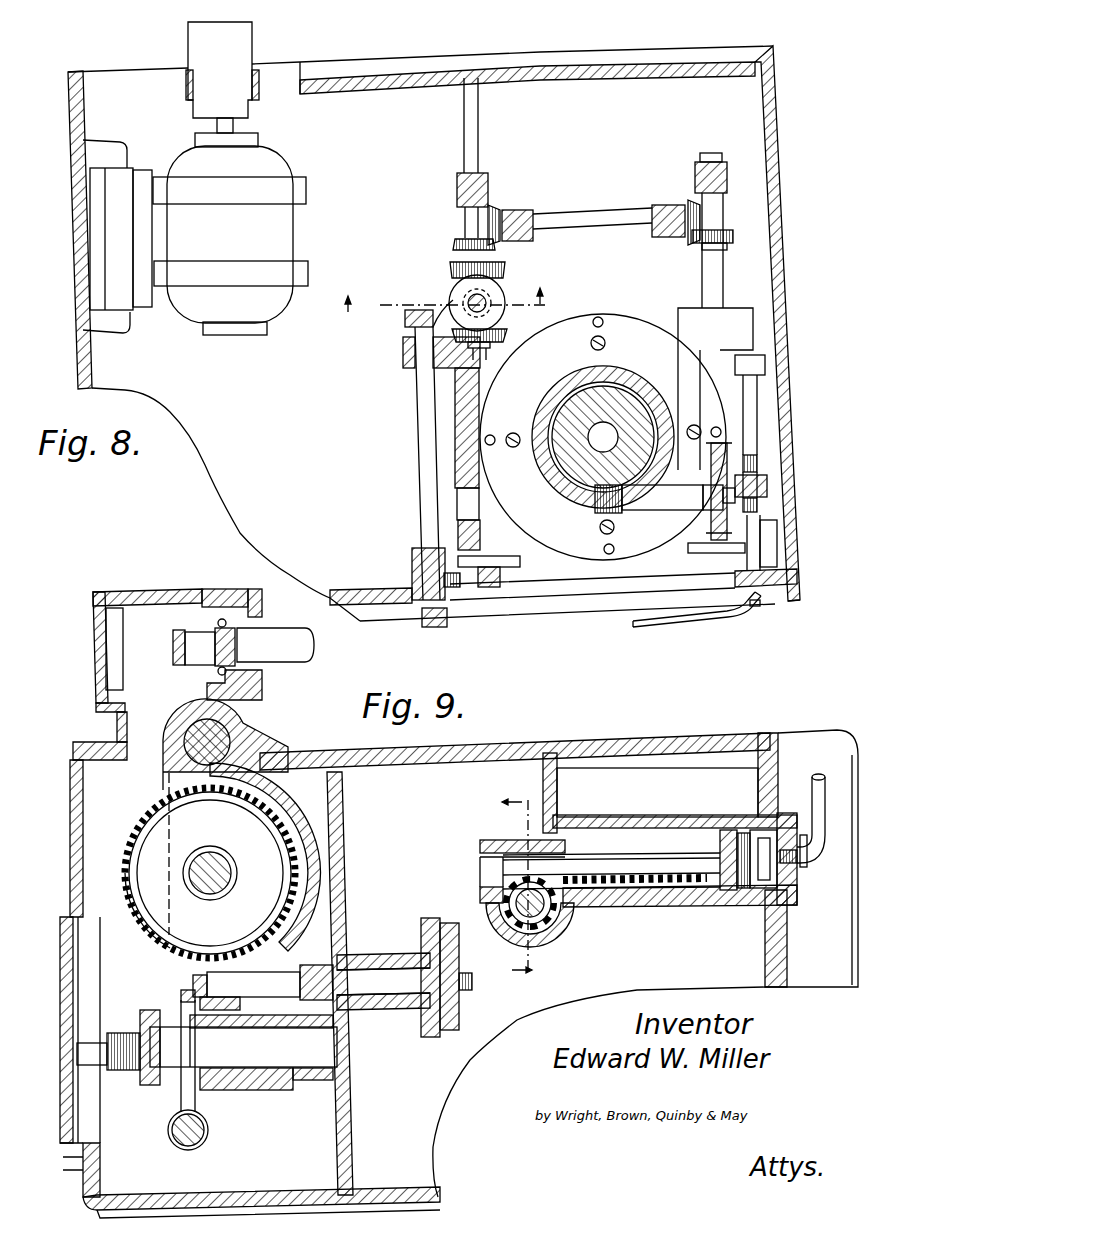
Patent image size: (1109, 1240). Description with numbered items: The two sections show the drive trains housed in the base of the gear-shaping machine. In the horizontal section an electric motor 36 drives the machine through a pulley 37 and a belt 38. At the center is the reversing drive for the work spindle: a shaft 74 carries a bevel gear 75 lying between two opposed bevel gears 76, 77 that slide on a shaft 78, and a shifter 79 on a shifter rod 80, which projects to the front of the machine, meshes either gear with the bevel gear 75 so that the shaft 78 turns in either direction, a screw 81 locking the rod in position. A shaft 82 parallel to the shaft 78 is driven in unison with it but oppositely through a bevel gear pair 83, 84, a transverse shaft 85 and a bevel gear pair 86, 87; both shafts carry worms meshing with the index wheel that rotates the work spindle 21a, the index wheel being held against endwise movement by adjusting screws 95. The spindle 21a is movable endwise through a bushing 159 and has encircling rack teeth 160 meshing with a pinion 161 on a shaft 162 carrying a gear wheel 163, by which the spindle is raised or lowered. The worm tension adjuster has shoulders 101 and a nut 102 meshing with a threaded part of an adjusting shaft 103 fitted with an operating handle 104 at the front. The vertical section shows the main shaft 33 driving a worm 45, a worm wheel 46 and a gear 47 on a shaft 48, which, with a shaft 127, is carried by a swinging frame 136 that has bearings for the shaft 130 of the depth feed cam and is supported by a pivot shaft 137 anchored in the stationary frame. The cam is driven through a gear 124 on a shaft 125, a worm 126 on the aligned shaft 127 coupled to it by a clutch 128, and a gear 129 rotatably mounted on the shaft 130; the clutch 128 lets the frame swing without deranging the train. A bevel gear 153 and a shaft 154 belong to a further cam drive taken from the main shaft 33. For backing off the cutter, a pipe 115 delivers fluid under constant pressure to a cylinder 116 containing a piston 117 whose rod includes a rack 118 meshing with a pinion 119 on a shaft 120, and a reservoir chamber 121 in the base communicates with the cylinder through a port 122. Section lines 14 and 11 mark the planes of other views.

In FIG. 8, the pulley 37 is at (218, 48).
In FIG. 8, the belt 38 is at (188, 93).
In FIG. 8, the electric motor 36 is at (199, 240).
In FIG. 8, the shaft 78 is at (470, 216).
In FIG. 8, the bevel gear 84 is at (494, 210).
In FIG. 8, the transverse shaft 85 is at (590, 222).
In FIG. 8, the bevel gear 86 is at (690, 205).
In FIG. 8, the bevel gear 87 is at (722, 238).
In FIG. 8, the shaft 82 is at (715, 292).
In FIG. 8, the bevel gear 83 is at (460, 246).
In FIG. 8, the bevel gear 76 is at (455, 272).
In FIG. 8, the bevel gear 75 is at (498, 292).
In FIG. 8, the shaft 74 is at (486, 308).
In FIG. 8, the bevel gear 77 is at (493, 334).
In FIG. 8, the section line 14 is at (355, 297).
In FIG. 8, the shifter 79 is at (447, 300).
In FIG. 8, the shifter rod 80 is at (426, 440).
In FIG. 8, the screw 81 is at (448, 590).
In FIG. 8, the work spindle 21a is at (640, 436).
In FIG. 8, the bushing 159 is at (552, 428).
In FIG. 8, the rack teeth 160 is at (575, 484).
In FIG. 8, the adjusting screws 95 is at (592, 343).
In FIG. 8, the pinion 161 is at (596, 506).
In FIG. 8, the shaft 162 is at (650, 497).
In FIG. 8, the gear wheel 163 is at (718, 526).
In FIG. 8, the adjusting shaft 103 is at (752, 422).
In FIG. 8, the nut 102 is at (757, 463).
In FIG. 8, the shoulders 101 is at (767, 485).
In FIG. 8, the operating handle 104 is at (695, 618).
In FIG. 9, the bevel gear 153 is at (187, 620).
In FIG. 9, the shaft 154 is at (278, 643).
In FIG. 9, the pivot shaft 137 is at (197, 728).
In FIG. 9, the swinging frame 136 is at (177, 787).
In FIG. 9, the shaft 130 is at (207, 888).
In FIG. 9, the gear 129 is at (142, 918).
In FIG. 9, the worm 126 is at (197, 972).
In FIG. 9, the shaft 127 is at (272, 991).
In FIG. 9, the clutch 128 is at (317, 970).
In FIG. 9, the shaft 125 is at (390, 989).
In FIG. 9, the gear 124 is at (440, 918).
In FIG. 9, the shaft 48 is at (207, 1052).
In FIG. 9, the gear 47 is at (143, 1083).
In FIG. 9, the worm wheel 46 is at (181, 1103).
In FIG. 9, the worm 45 is at (168, 1131).
In FIG. 9, the main shaft 33 is at (180, 1144).
In FIG. 9, the reservoir chamber 121 is at (643, 770).
In FIG. 9, the pipe 115 is at (818, 795).
In FIG. 9, the rack 118 is at (625, 884).
In FIG. 9, the shaft 120 is at (518, 930).
In FIG. 9, the pinion 119 is at (552, 924).
In FIG. 9, the piston 117 is at (732, 890).
In FIG. 9, the port 122 is at (755, 830).
In FIG. 9, the cylinder 116 is at (762, 870).
In FIG. 9, the section line 11 is at (500, 811).